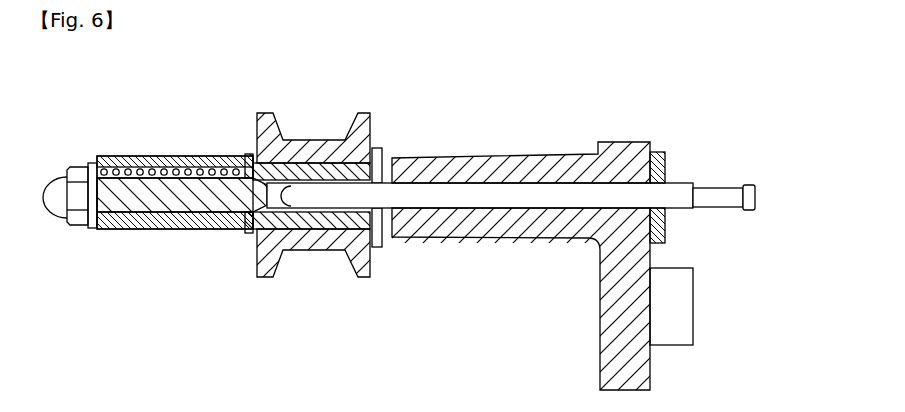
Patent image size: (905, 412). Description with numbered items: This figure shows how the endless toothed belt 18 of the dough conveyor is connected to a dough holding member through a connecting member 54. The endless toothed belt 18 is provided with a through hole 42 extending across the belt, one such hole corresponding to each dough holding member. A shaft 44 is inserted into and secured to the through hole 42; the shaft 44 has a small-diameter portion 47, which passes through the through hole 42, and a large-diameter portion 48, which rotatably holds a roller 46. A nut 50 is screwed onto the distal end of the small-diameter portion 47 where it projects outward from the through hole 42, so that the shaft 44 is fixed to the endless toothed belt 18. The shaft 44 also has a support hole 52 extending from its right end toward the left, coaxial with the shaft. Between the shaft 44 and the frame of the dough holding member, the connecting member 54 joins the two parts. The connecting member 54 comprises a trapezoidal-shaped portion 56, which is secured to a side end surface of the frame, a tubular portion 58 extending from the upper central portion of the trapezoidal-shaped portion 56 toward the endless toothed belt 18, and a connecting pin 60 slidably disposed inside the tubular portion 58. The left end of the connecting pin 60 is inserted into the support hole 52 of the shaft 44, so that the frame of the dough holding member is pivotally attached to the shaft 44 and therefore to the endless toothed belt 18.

The endless toothed belt 18 is at (175, 156).
The through hole 42 is at (178, 212).
The shaft 44 is at (216, 214).
The roller 46 is at (337, 138).
The small-diameter portion 47 is at (128, 214).
The large-diameter portion 48 is at (325, 232).
The nut 50 is at (78, 167).
The support hole 52 is at (280, 135).
The connecting member 54 is at (519, 155).
The trapezoidal-shaped portion 56 is at (610, 333).
The tubular portion 58 is at (470, 238).
The connecting pin 60 is at (709, 184).